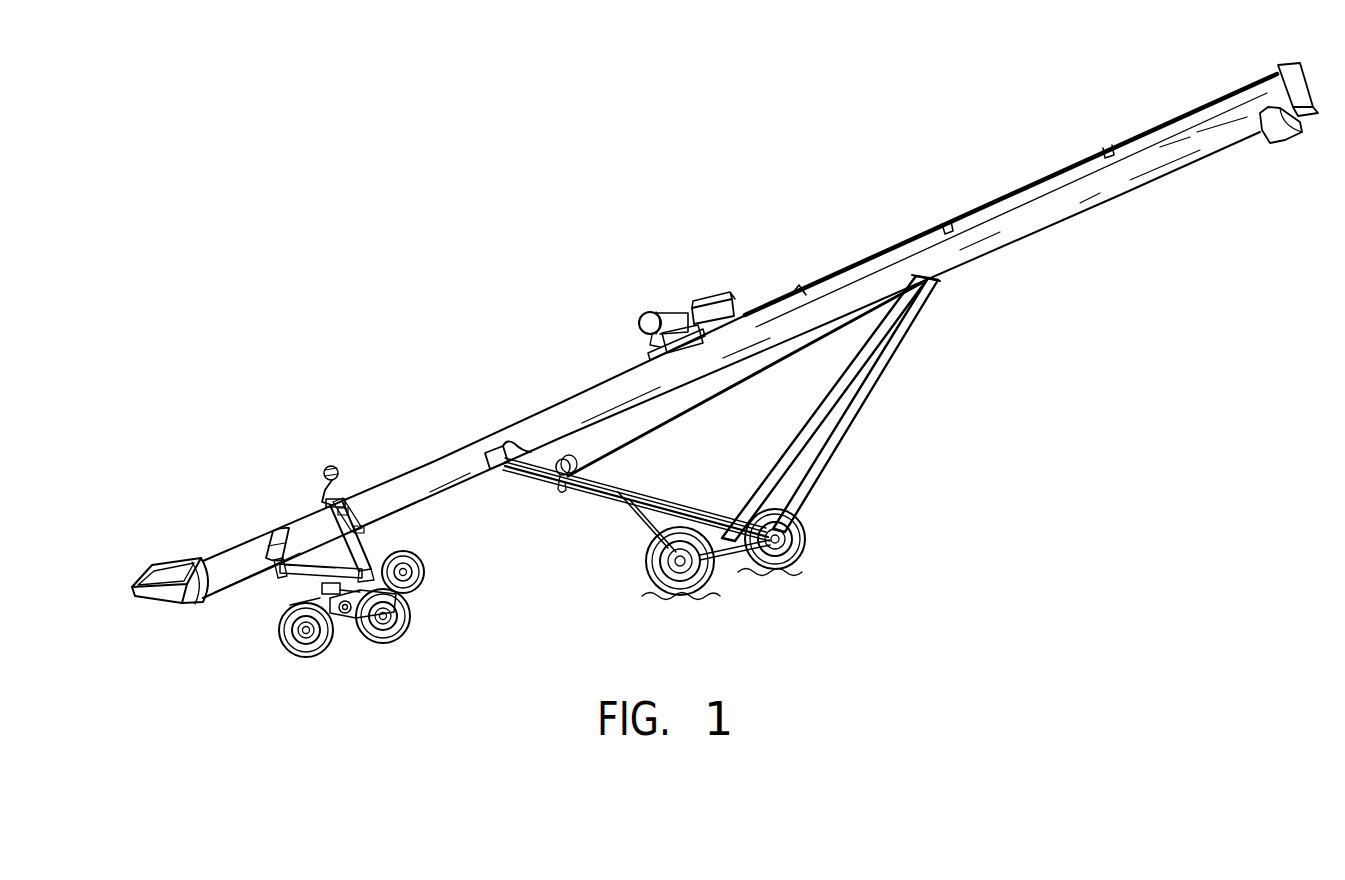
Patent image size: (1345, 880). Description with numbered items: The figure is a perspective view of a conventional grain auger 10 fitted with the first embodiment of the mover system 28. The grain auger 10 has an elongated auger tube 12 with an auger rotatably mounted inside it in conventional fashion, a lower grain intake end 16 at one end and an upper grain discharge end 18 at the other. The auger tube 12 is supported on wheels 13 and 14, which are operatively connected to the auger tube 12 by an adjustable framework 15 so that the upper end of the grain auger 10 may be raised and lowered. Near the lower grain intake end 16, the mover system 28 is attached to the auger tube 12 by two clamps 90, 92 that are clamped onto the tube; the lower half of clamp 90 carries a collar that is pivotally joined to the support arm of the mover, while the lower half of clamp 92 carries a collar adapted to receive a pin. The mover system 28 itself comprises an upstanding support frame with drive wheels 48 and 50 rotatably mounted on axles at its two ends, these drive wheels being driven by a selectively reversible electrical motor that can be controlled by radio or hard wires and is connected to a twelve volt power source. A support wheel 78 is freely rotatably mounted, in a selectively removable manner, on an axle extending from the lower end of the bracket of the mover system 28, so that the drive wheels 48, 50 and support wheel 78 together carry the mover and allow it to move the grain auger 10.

The grain auger 10 is at (912, 190).
The auger tube 12 is at (1078, 197).
The wheel 13 is at (657, 572).
The wheel 14 is at (800, 546).
The adjustable framework 15 is at (590, 470).
The lower grain intake end 16 is at (176, 557).
The upper grain discharge end 18 is at (1285, 140).
The mover system 28 is at (432, 545).
The drive wheel 48 is at (391, 637).
The drive wheel 50 is at (304, 649).
The support wheel 78 is at (425, 573).
The clamp 90 is at (273, 543).
The clamp 92 is at (352, 505).